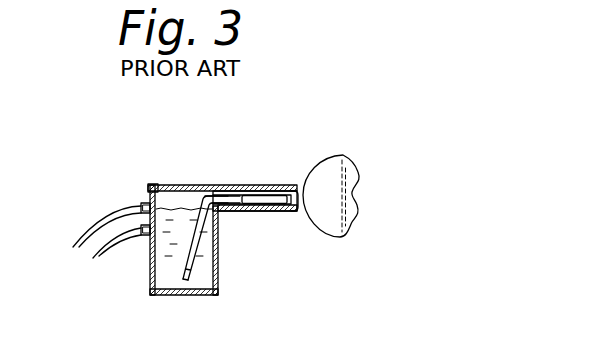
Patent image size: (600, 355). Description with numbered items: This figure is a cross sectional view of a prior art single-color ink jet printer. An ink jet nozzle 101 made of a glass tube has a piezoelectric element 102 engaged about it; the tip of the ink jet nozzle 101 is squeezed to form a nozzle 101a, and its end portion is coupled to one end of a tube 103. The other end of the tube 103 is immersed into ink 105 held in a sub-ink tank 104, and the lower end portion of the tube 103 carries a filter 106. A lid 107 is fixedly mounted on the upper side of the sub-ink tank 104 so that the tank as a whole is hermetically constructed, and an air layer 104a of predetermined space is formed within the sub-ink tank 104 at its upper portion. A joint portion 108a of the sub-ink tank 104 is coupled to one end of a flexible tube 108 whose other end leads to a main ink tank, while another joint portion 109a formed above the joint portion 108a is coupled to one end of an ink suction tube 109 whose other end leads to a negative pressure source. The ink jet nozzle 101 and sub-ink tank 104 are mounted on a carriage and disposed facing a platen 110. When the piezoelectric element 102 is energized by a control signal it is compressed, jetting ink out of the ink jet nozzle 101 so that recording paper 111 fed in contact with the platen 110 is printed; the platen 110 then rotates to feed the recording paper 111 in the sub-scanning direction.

The ink jet nozzle 101 is at (247, 206).
The nozzle 101a is at (299, 213).
The piezoelectric element 102 is at (278, 214).
The tube 103 is at (217, 219).
The sub-ink tank 104 is at (217, 286).
The air layer 104a is at (167, 184).
The ink 105 is at (153, 297).
The filter 106 is at (188, 283).
The lid 107 is at (215, 184).
The flexible tube 108 is at (99, 263).
The joint portion 108a is at (142, 237).
The ink suction tube 109 is at (87, 229).
The joint portion 109a is at (146, 203).
The platen 110 is at (353, 168).
The recording paper 111 is at (304, 182).